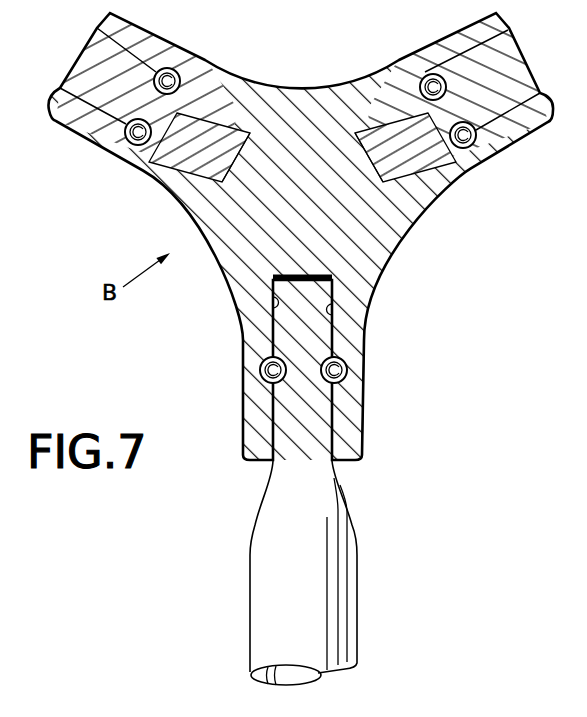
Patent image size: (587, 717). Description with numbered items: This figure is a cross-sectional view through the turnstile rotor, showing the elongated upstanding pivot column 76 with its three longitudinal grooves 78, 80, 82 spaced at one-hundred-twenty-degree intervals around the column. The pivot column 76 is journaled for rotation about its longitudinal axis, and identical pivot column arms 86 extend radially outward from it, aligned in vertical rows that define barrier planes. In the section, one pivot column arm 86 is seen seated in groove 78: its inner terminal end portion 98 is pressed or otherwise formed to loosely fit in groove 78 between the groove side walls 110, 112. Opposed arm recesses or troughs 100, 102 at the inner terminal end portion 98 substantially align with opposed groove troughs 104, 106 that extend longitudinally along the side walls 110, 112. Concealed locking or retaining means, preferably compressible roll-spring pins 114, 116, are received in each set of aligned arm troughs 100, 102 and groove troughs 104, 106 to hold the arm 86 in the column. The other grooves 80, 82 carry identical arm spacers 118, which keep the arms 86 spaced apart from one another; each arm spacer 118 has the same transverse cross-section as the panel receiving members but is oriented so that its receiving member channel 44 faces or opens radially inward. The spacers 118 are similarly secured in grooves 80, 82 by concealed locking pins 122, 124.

The receiving member channel 44 is at (184, 126).
The pivot column 76 is at (407, 208).
The groove 78 is at (311, 276).
The groove 80 is at (231, 153).
The groove 82 is at (380, 150).
The pivot column arm 86 is at (338, 587).
The inner terminal end portion 98 is at (318, 430).
The arm recess or trough 100 is at (278, 380).
The arm recess or trough 102 is at (327, 363).
The groove trough 104 is at (262, 380).
The groove trough 106 is at (348, 367).
The side wall 110 is at (273, 306).
The side wall 112 is at (333, 311).
The compressible roll-spring pin 114 is at (263, 368).
The compressible roll-spring pin 116 is at (341, 381).
The arm spacer 118 is at (100, 73).
The concealed locking pin 122 is at (133, 141).
The concealed locking pin 124 is at (164, 68).